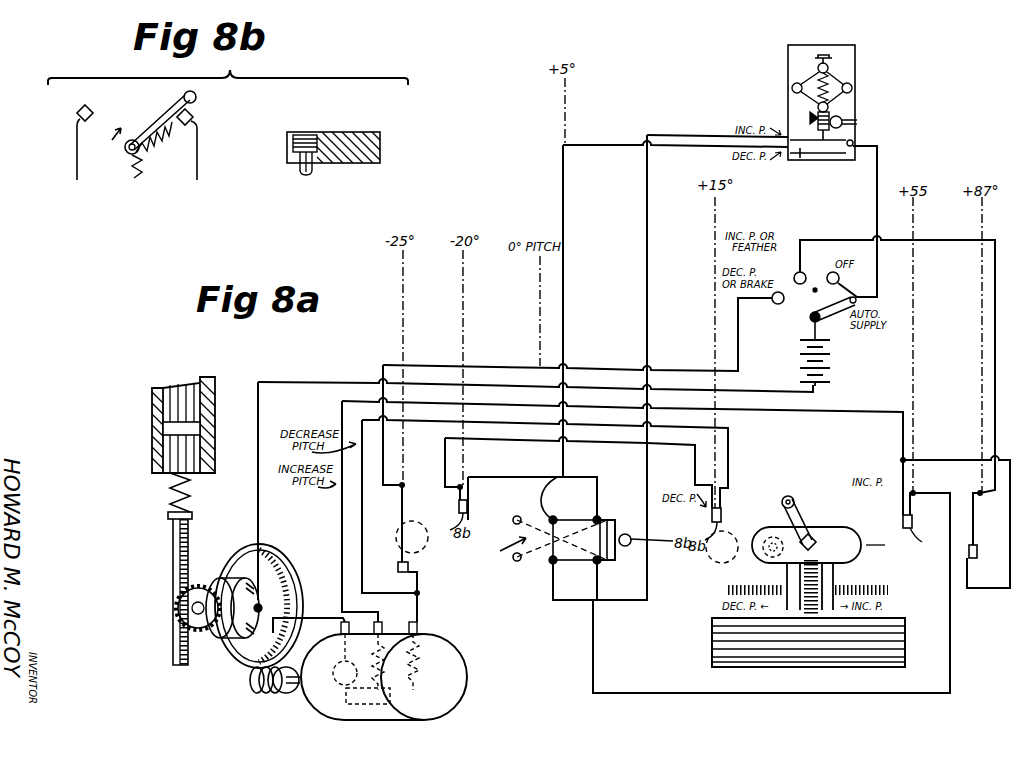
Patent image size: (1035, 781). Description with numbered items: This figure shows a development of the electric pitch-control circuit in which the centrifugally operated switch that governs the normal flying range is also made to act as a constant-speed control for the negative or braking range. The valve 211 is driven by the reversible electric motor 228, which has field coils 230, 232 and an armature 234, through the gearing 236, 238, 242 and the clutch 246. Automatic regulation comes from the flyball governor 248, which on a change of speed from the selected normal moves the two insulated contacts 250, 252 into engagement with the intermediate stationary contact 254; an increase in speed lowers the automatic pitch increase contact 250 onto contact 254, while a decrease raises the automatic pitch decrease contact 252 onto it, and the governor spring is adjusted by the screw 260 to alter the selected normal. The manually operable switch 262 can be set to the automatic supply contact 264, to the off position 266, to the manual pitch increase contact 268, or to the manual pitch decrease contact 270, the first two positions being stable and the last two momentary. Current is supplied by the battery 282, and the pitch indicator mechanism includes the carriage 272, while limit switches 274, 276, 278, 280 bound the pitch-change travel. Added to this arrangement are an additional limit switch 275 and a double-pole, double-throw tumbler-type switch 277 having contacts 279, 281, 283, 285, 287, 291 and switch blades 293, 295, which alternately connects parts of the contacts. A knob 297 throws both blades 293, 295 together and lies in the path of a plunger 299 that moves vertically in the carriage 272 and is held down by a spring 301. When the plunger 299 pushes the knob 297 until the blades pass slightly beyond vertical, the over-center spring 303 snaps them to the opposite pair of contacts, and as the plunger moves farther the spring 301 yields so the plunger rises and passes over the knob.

In FIG. 8A, the valve 211 is at (233, 382).
In FIG. 8A, the electric motor 228 is at (384, 687).
In FIG. 8A, the field coil 230 is at (368, 670).
In FIG. 8A, the field coil 232 is at (426, 669).
In FIG. 8A, the armature 234 is at (333, 659).
In FIG. 8A, the gearing 236 is at (246, 686).
In FIG. 8A, the gearing 238 is at (268, 546).
In FIG. 8A, the gearing 242 is at (200, 630).
In FIG. 8A, the clutch 246 is at (228, 570).
In FIG. 8A, the flyball governor 248 is at (852, 88).
In FIG. 8A, the automatic pitch increase contact 250 is at (800, 137).
In FIG. 8A, the automatic pitch decrease contact 252 is at (813, 155).
In FIG. 8A, the automatic current supply contact 254 is at (846, 137).
In FIG. 8A, the adjusting screw 260 is at (832, 58).
In FIG. 8A, the manually operable switch 262 is at (824, 322).
In FIG. 8A, the automatic supply contact 264 is at (851, 283).
In FIG. 8A, the off position 266 is at (828, 272).
In FIG. 8A, the manual pitch increase contact 268 is at (818, 295).
In FIG. 8A, the manual pitch decrease contact 270 is at (778, 311).
In FIG. 8B, the carriage 272 is at (380, 147).
In FIG. 8A, the carriage 272 is at (832, 513).
In FIG. 8A, the limit switch 274 is at (728, 506).
In FIG. 8A, the additional limit switch 275 is at (474, 472).
In FIG. 8A, the limit switch 276 is at (903, 507).
In FIG. 8B, the double-pole double-throw tumbler-type switch 277 is at (101, 139).
In FIG. 8A, the double-pole double-throw tumbler-type switch 277 is at (500, 547).
In FIG. 8A, the limit switch 278 is at (421, 571).
In FIG. 8B, the contact 279 is at (89, 106).
In FIG. 8A, the contact 279 is at (530, 500).
In FIG. 8A, the limit switch 280 is at (982, 572).
In FIG. 8A, the contact 281 is at (517, 561).
In FIG. 8A, the battery 282 is at (838, 378).
In FIG. 8B, the contact 283 is at (126, 153).
In FIG. 8A, the contact 283 is at (537, 491).
In FIG. 8A, the contact 285 is at (553, 562).
In FIG. 8B, the contact 287 is at (193, 122).
In FIG. 8A, the contact 287 is at (600, 518).
In FIG. 8A, the contact 291 is at (600, 564).
In FIG. 8B, the switch blade 293 is at (164, 114).
In FIG. 8A, the switch blade 293 is at (576, 508).
In FIG. 8A, the switch blade 295 is at (560, 566).
In FIG. 8B, the knob 297 is at (196, 99).
In FIG. 8A, the knob 297 is at (630, 535).
In FIG. 8B, the plunger 299 is at (312, 170).
In FIG. 8A, the plunger 299 is at (770, 561).
In FIG. 8B, the spring 301 is at (313, 135).
In FIG. 8A, the spring 301 is at (768, 520).
In FIG. 8B, the over-center spring 303 is at (141, 172).